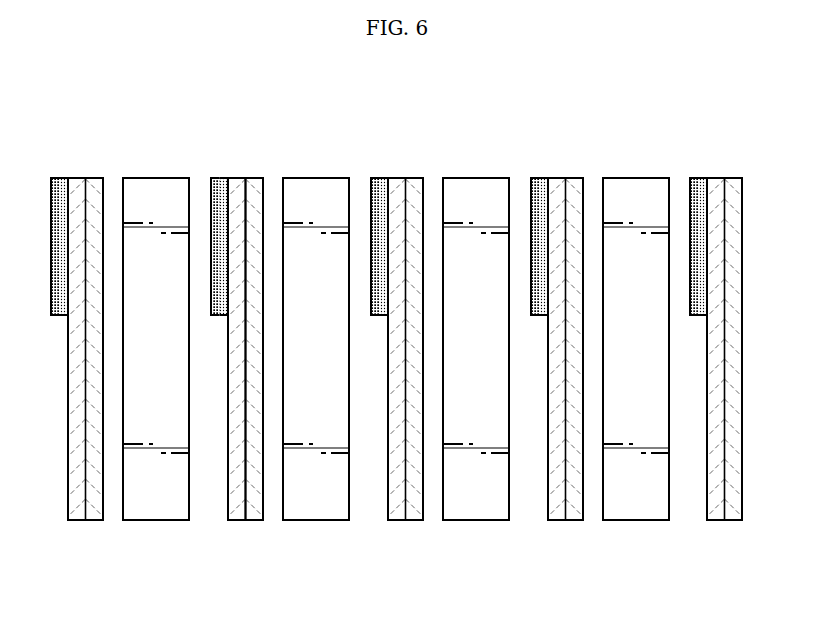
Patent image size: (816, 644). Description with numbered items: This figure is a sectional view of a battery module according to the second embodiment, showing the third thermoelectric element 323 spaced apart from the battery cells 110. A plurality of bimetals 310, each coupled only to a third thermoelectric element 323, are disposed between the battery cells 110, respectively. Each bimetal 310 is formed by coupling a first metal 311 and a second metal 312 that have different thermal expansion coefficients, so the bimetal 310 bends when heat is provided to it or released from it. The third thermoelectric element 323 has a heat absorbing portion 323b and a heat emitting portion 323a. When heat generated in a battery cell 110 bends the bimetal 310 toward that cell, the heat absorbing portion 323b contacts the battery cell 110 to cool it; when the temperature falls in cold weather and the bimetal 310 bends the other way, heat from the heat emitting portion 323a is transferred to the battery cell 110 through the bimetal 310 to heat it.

The battery cell 110 is at (134, 177).
The bimetal 310 is at (405, 402).
The first metal 311 is at (240, 521).
The second metal 312 is at (270, 378).
The third thermoelectric element 323 is at (379, 198).
The heat emitting portion 323a is at (248, 222).
The heat absorbing portion 323b is at (215, 178).